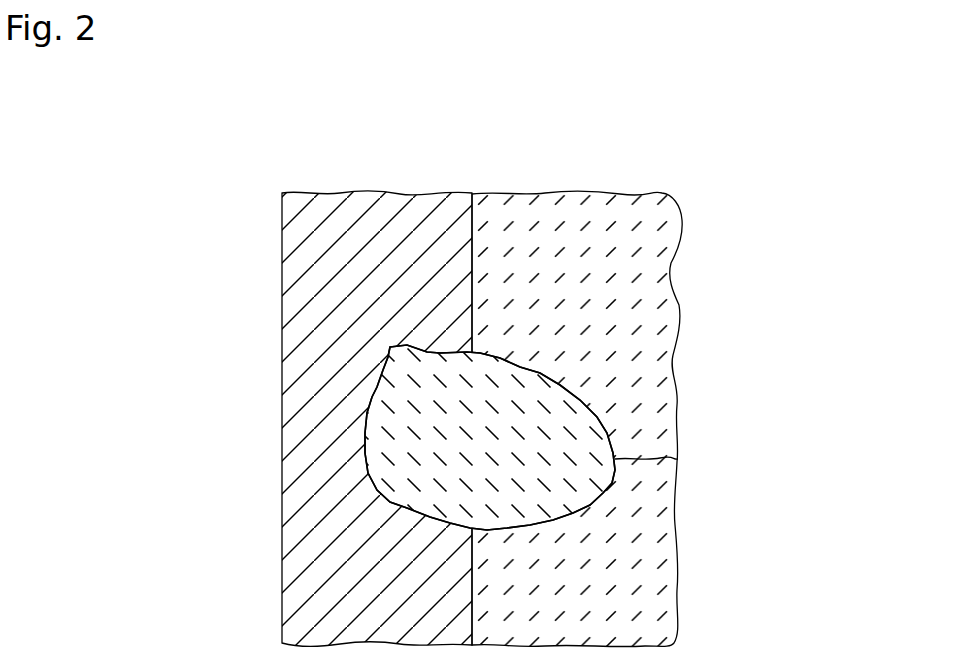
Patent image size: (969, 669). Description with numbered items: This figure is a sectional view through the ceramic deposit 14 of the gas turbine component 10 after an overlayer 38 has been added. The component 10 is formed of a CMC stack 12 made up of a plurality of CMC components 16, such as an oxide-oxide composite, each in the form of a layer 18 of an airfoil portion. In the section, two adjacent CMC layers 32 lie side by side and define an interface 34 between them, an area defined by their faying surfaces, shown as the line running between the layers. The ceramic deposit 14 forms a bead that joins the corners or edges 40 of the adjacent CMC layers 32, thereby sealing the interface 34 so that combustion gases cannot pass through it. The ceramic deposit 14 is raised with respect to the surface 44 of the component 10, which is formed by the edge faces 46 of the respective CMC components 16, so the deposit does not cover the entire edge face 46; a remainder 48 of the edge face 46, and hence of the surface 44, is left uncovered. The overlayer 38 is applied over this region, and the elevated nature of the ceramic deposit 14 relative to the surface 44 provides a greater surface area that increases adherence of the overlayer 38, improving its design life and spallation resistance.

The gas turbine component 10 is at (515, 370).
The CMC stack 12 is at (707, 155).
The ceramic deposit 14 is at (400, 449).
The CMC component 16 is at (644, 419).
The layer 18 is at (644, 419).
The adjacent CMC layers 32 is at (650, 265).
The interface 34 is at (652, 456).
The overlayer 38 is at (378, 143).
The corners or edges 40 is at (522, 355).
The surface 44 is at (377, 370).
The edge face 46 is at (377, 370).
The remainder 48 is at (377, 370).